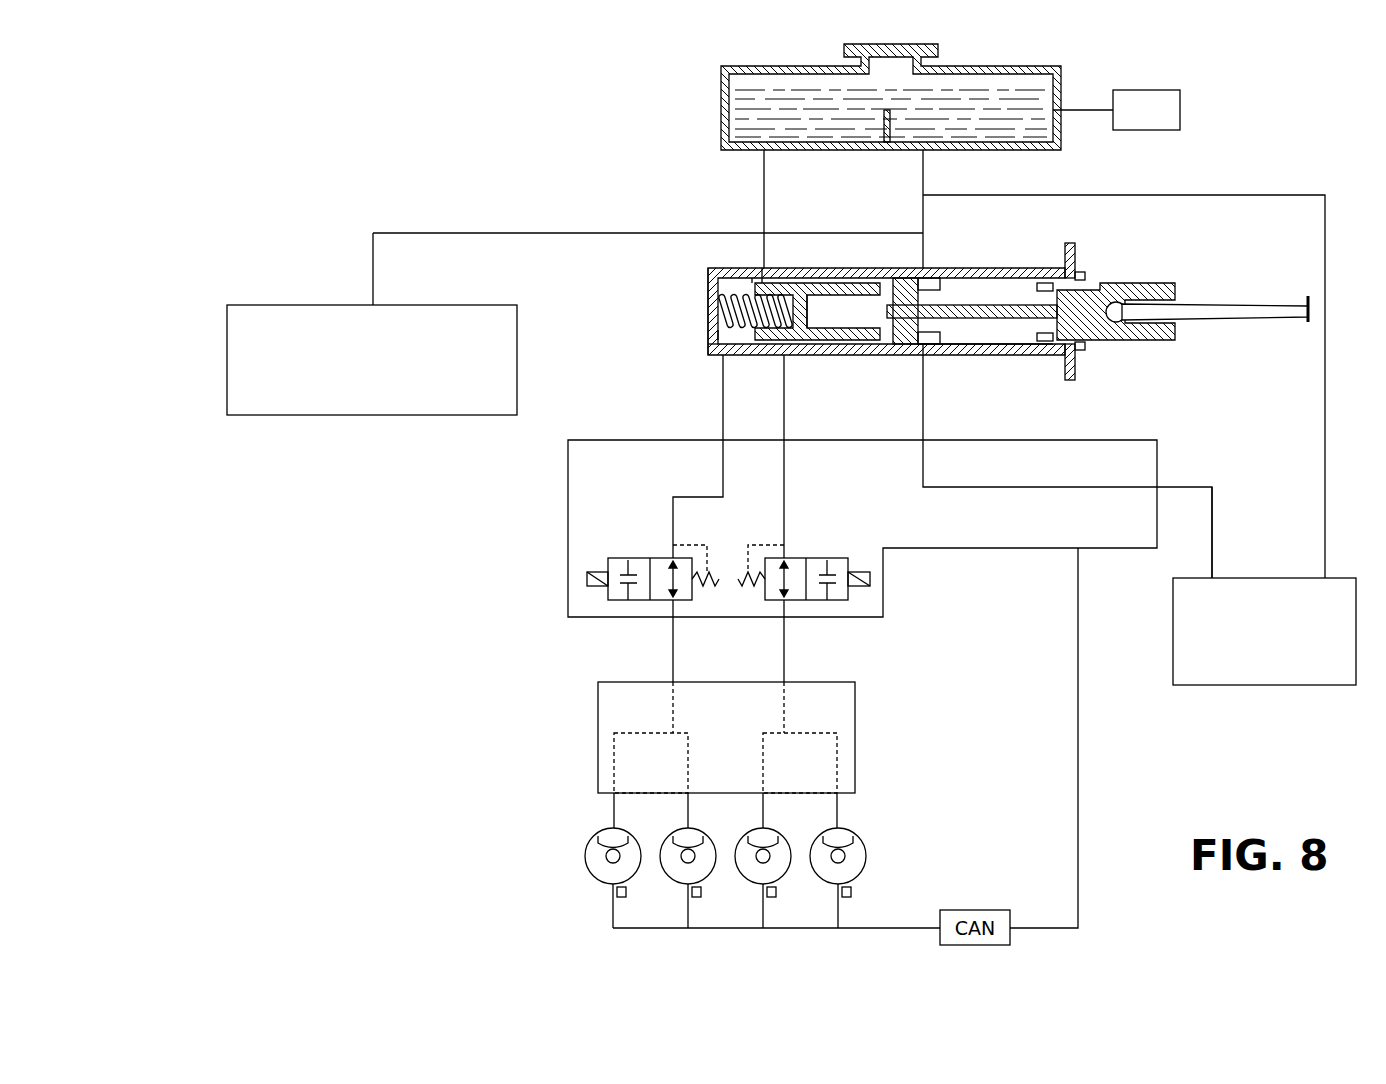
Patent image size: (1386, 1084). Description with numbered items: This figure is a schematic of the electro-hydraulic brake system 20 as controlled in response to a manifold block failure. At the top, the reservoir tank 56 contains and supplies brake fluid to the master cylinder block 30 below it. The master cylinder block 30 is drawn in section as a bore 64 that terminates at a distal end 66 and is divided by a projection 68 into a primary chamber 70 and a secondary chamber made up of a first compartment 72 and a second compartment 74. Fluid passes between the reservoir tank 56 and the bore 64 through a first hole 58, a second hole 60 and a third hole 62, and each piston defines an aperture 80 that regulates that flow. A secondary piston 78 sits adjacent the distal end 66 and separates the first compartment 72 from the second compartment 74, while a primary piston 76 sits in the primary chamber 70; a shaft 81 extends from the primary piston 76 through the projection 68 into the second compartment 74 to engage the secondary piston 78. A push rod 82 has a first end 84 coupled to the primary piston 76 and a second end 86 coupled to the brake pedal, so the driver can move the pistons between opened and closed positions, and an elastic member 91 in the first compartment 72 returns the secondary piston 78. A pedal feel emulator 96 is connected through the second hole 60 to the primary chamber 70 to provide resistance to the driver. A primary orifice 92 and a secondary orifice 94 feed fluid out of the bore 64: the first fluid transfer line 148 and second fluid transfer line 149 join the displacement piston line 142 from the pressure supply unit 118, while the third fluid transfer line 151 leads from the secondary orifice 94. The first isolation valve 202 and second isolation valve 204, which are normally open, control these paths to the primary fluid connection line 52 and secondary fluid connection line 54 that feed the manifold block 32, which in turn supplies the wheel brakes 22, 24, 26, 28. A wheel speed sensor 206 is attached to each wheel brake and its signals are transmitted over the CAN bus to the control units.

The electro-hydraulic brake system 20 is at (252, 193).
The front wheel brake 22 is at (866, 856).
The front wheel brake 24 is at (790, 845).
The rear wheel brake 26 is at (665, 838).
The rear wheel brake 28 is at (585, 860).
The master cylinder block 30 is at (1163, 460).
The manifold block 32 is at (592, 736).
The primary fluid connection line 52 is at (784, 630).
The secondary fluid connection line 54 is at (673, 628).
The reservoir tank 56 is at (1062, 82).
The first hole 58 is at (752, 270).
The second hole 60 is at (928, 270).
The third hole 62 is at (1062, 276).
The bore 64 is at (840, 282).
The distal end 66 is at (708, 283).
The projection 68 is at (912, 272).
The primary chamber 70 is at (998, 340).
The first compartment 72 is at (722, 299).
The second compartment 74 is at (842, 335).
The primary piston 76 is at (1160, 286).
The secondary piston 78 is at (783, 276).
The aperture 80 is at (762, 357).
The shaft 81 is at (982, 305).
The push rod 82 is at (1250, 303).
The first end 84 is at (1122, 304).
The second end 86 is at (1298, 298).
The elastic member 91 is at (718, 320).
The primary orifice 92 is at (935, 348).
The secondary orifice 94 is at (712, 352).
The pedal feel emulator 96 is at (215, 336).
The pressure supply unit 118 is at (1165, 676).
The displacement piston line 142 is at (1212, 512).
The first fluid transfer line 148 is at (923, 468).
The second fluid transfer line 149 is at (784, 465).
The third fluid transfer line 151 is at (723, 468).
The first isolation valve 202 is at (870, 579).
The second isolation valve 204 is at (587, 579).
The wheel speed sensor 206 is at (615, 888).